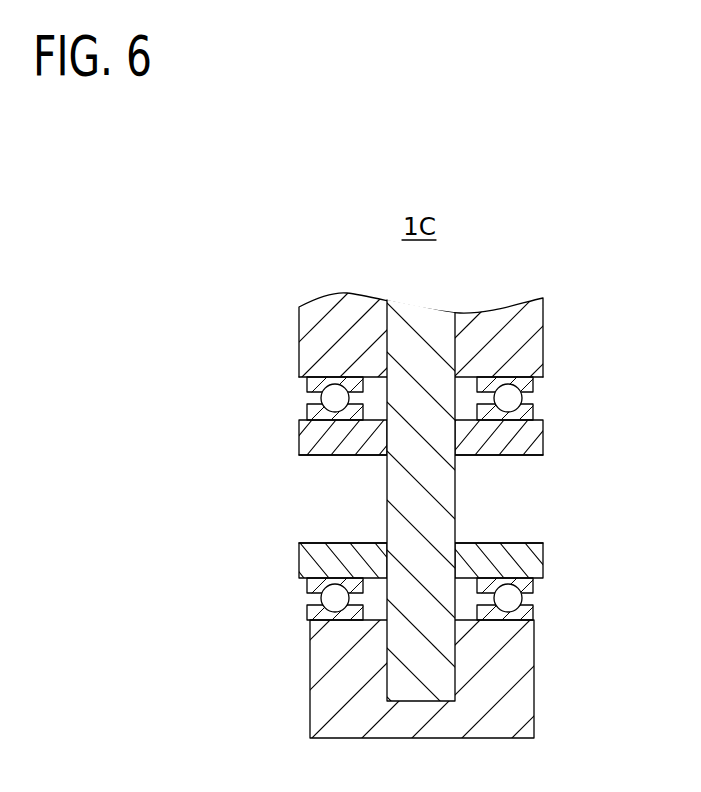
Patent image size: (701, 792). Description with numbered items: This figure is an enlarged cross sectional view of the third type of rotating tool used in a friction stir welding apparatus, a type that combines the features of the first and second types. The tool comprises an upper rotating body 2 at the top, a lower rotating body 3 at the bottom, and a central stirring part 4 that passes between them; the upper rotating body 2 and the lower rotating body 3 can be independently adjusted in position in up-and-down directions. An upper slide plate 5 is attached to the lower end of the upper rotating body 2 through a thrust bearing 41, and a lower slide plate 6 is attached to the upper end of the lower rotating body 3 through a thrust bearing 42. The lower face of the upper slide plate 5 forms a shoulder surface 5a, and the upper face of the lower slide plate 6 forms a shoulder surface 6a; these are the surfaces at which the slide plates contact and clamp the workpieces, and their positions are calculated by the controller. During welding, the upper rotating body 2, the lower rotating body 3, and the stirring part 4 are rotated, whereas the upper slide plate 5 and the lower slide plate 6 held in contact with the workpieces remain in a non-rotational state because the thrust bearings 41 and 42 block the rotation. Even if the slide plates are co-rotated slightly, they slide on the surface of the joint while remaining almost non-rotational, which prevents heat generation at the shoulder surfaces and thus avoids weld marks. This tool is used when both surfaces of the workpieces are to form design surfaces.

The upper rotating body 2 is at (310, 345).
The lower rotating body 3 is at (310, 663).
The stirring part 4 is at (412, 498).
The upper slide plate 5 is at (528, 438).
The shoulder surface 5a is at (517, 457).
The lower slide plate 6 is at (525, 560).
The shoulder surface 6a is at (517, 543).
The thrust bearing 41 is at (533, 382).
The thrust bearing 42 is at (532, 610).